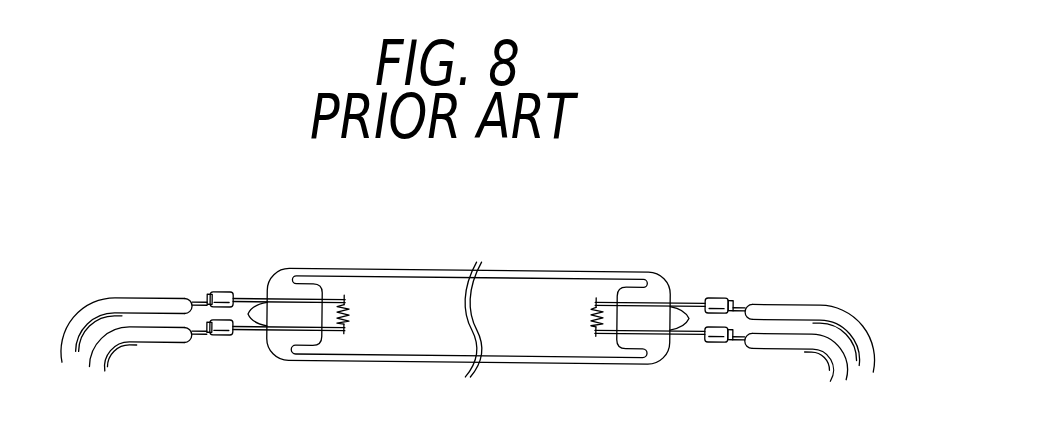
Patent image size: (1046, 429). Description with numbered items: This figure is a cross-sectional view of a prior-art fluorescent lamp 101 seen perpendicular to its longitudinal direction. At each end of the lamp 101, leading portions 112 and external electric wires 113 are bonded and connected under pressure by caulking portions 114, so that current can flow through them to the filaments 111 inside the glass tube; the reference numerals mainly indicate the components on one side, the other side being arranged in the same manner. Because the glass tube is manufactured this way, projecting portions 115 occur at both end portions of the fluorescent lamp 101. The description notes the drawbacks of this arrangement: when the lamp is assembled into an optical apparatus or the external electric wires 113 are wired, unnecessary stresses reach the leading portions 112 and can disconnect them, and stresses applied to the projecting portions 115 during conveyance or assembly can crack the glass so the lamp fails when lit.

The fluorescent lamp 101 is at (435, 263).
The filaments 111 is at (350, 313).
The leading portions 112 is at (247, 297).
The external electric wires 113 is at (160, 341).
The caulking portions 114 is at (218, 294).
The projecting portions 115 is at (693, 305).